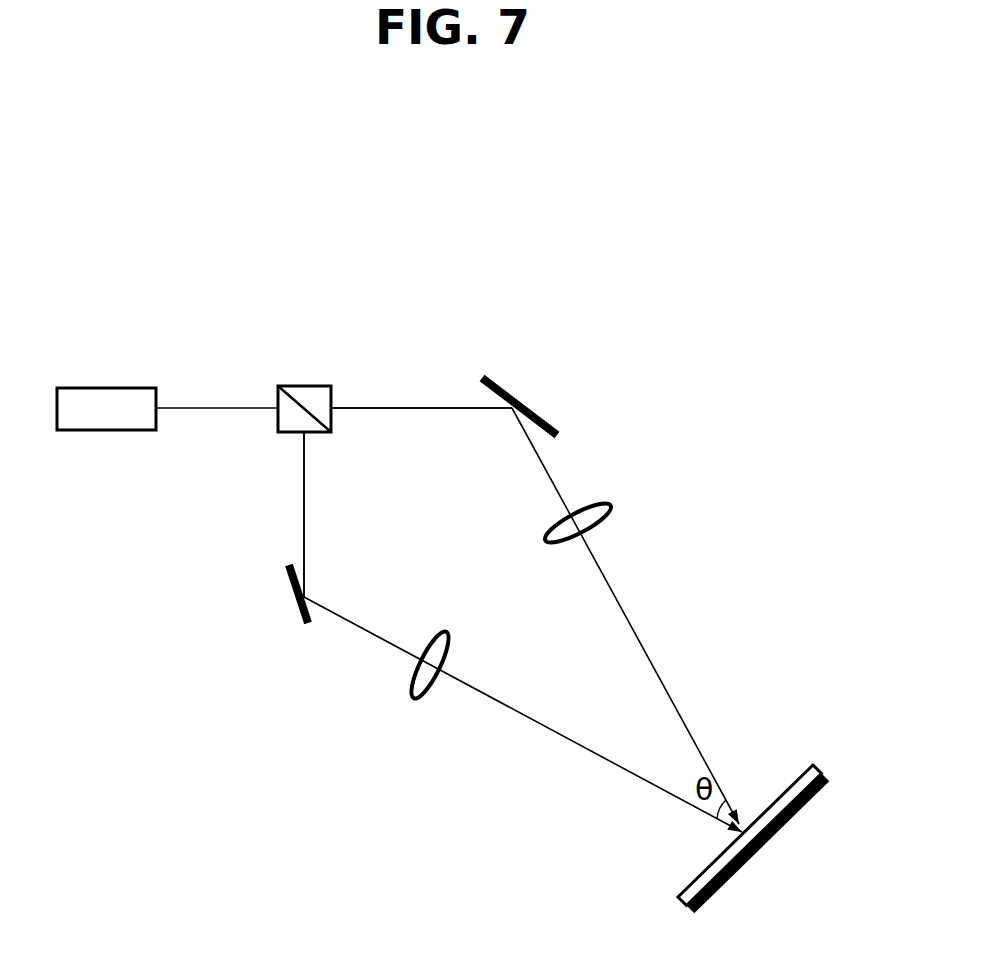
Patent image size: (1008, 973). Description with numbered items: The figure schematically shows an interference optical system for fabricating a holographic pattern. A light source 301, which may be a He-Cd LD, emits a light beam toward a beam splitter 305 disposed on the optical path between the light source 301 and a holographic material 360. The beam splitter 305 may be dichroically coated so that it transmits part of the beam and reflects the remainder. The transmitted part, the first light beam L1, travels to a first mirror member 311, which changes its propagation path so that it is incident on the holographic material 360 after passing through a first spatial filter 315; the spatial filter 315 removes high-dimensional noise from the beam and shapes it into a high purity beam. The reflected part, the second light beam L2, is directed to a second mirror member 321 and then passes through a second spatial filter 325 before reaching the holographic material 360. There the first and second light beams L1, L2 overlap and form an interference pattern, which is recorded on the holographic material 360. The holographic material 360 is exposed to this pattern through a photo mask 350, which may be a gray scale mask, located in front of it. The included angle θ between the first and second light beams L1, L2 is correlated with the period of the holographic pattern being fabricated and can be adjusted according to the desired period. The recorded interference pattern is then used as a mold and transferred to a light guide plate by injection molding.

The light source 301 is at (107, 402).
The beam splitter 305 is at (308, 396).
The first light beam L1 is at (415, 407).
The second light beam L2 is at (303, 500).
The first mirror member 311 is at (510, 392).
The first spatial filter 315 is at (600, 506).
The second mirror member 321 is at (297, 612).
The second spatial filter 325 is at (411, 694).
The photo mask 350 is at (778, 797).
The holographic material 360 is at (800, 817).